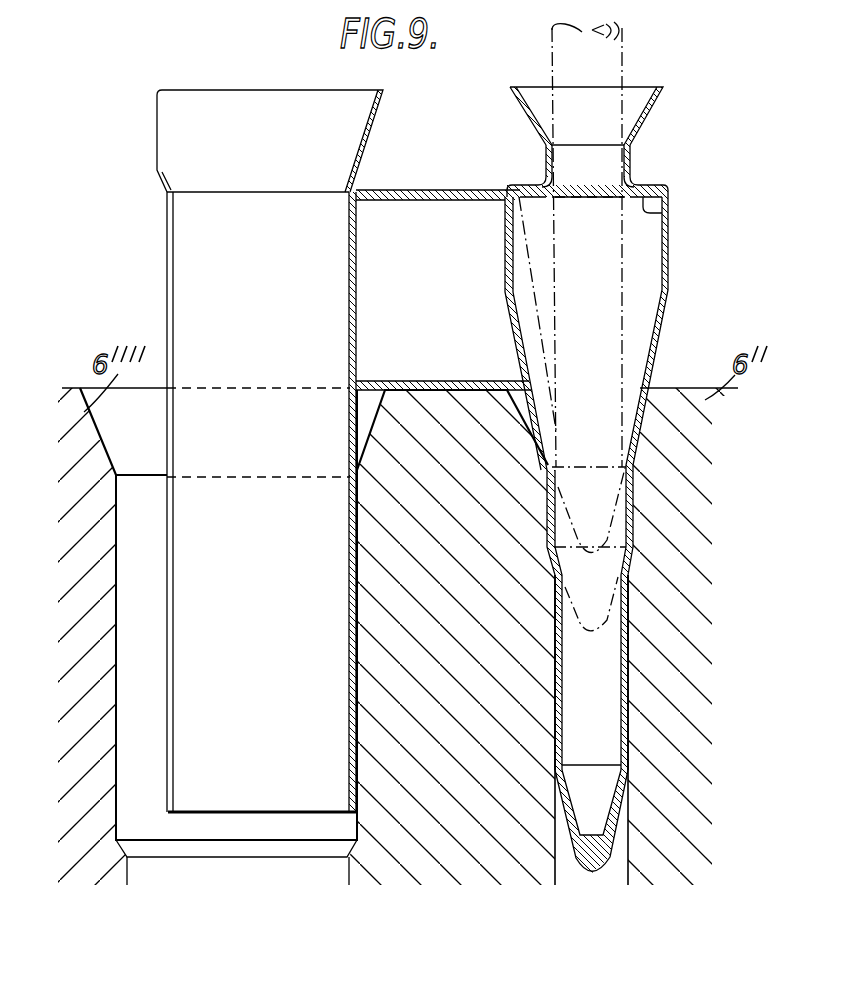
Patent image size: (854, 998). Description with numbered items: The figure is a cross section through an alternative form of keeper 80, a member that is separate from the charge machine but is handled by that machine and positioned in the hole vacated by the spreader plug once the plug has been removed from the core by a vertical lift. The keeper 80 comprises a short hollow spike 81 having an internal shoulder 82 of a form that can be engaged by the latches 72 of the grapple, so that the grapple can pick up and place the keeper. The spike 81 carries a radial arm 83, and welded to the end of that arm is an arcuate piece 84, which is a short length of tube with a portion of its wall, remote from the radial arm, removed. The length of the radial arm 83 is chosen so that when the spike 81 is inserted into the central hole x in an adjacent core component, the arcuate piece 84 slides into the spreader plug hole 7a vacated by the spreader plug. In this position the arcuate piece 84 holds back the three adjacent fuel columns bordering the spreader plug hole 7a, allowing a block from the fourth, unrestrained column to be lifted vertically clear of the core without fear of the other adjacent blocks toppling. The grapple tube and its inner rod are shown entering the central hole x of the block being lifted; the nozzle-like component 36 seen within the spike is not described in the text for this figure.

The keeper 80 is at (418, 160).
The internal shoulder 82 is at (648, 211).
The latches 72 is at (631, 447).
The nozzle 36 is at (593, 327).
The hollow spike 81 is at (633, 618).
The central hole x is at (632, 652).
The radial arm 83 is at (453, 299).
The arcuate piece 84 is at (271, 644).
The spreader plug hole 7a is at (150, 556).